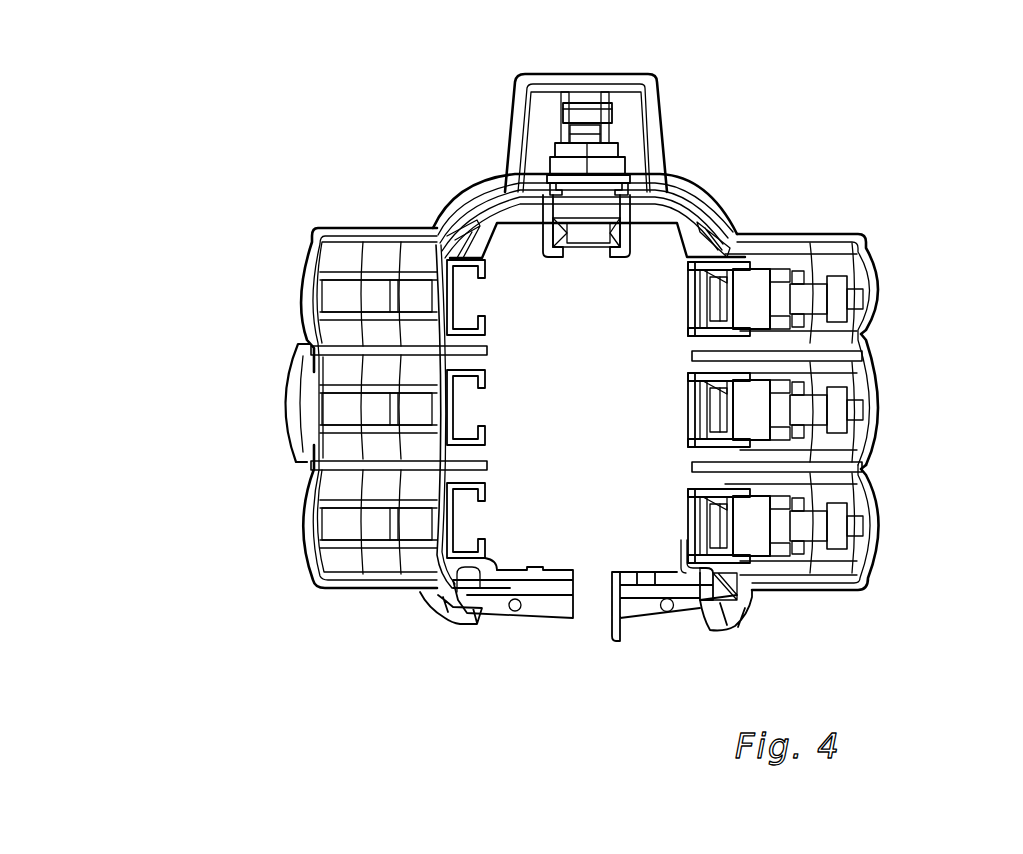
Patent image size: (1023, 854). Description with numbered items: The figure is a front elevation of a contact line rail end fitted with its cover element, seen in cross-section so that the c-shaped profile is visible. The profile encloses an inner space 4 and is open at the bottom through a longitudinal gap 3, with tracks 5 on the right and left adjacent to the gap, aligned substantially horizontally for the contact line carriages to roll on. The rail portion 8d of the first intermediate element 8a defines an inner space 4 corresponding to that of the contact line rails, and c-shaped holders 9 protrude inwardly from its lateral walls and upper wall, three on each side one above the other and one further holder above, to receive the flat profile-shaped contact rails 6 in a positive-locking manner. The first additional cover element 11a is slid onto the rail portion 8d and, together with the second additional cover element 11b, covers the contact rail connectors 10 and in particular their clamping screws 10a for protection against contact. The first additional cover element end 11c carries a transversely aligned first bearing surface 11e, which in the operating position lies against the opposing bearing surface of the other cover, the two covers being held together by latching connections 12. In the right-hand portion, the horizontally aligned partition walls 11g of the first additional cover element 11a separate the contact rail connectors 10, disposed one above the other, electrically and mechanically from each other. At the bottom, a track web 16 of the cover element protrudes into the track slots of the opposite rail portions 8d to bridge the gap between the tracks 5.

The longitudinal gap 3 is at (592, 608).
The inner space 4 is at (598, 418).
The tracks 5 is at (673, 583).
The contact rails 6 is at (733, 265).
The first intermediate element 8a is at (677, 217).
The rail portion 8d is at (497, 213).
The holders 9 is at (465, 258).
The contact rail connector 10 is at (600, 163).
The clamping screw 10a is at (590, 113).
The first additional cover element 11a is at (298, 262).
The second additional cover element 11b is at (630, 80).
The first additional cover element end 11c is at (867, 262).
The first bearing surface 11e is at (865, 470).
The partition wall 11g is at (813, 353).
The latching connections 12 is at (297, 416).
The track web 16 is at (533, 575).